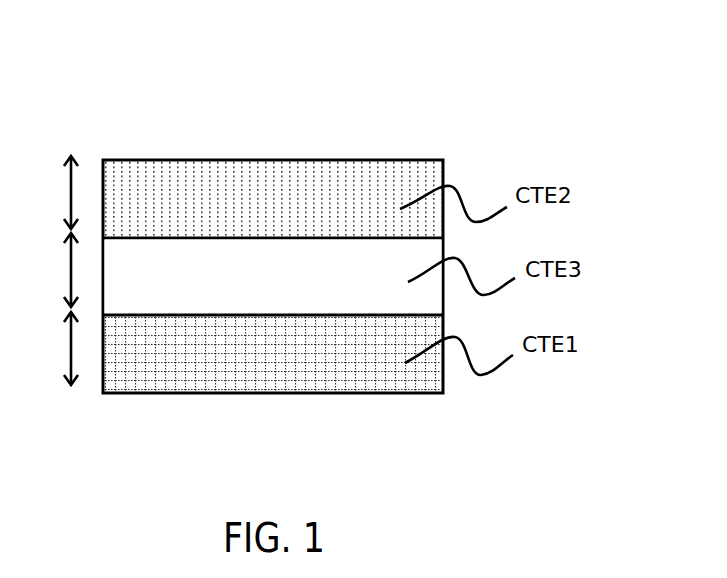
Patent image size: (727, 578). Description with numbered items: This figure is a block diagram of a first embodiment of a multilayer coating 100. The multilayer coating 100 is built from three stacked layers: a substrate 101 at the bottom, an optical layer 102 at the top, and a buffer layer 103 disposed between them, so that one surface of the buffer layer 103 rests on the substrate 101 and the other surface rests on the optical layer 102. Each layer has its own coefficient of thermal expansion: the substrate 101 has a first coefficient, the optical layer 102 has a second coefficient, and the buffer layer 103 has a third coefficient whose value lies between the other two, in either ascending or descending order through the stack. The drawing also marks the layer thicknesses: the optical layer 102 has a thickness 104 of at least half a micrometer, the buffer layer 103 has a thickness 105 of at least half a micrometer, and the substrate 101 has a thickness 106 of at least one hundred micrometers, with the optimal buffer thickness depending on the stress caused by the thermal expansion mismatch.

The multilayer coating 100 is at (386, 101).
The substrate 101 is at (294, 366).
The optical layer 102 is at (296, 213).
The buffer layer 103 is at (294, 292).
The thickness of the optical layer 104 is at (42, 192).
The thickness of the buffer layer 105 is at (42, 270).
The thickness of the substrate 106 is at (42, 348).